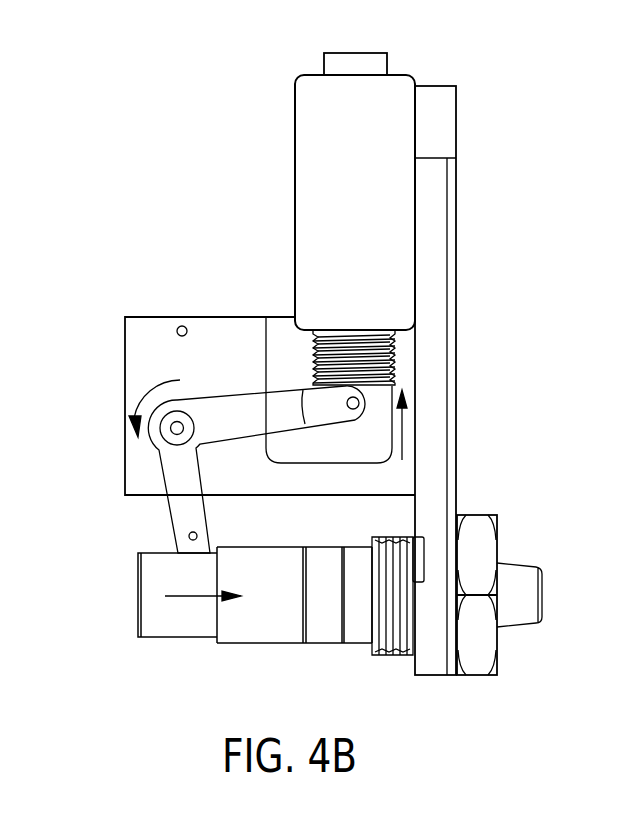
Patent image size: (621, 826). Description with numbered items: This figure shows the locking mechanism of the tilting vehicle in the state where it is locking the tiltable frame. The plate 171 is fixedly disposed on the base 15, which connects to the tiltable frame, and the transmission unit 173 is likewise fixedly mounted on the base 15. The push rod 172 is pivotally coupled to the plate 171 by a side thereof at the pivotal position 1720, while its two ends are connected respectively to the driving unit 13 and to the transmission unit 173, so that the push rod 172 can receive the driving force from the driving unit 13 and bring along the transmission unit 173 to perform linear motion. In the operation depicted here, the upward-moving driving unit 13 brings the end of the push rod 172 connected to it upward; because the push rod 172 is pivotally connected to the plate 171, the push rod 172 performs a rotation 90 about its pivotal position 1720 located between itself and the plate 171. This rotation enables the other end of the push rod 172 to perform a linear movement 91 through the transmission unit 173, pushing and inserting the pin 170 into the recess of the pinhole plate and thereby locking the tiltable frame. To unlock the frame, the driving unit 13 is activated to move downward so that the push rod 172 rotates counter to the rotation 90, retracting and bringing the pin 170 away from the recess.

The driving unit 13 is at (394, 88).
The base 15 is at (433, 247).
The plate 171 is at (212, 327).
The push rod 172 is at (180, 512).
The pivotal position 1720 is at (175, 433).
The transmission unit 173 is at (228, 529).
The pin 170 is at (525, 598).
The rotation 90 is at (160, 381).
The linear movement 91 is at (194, 598).